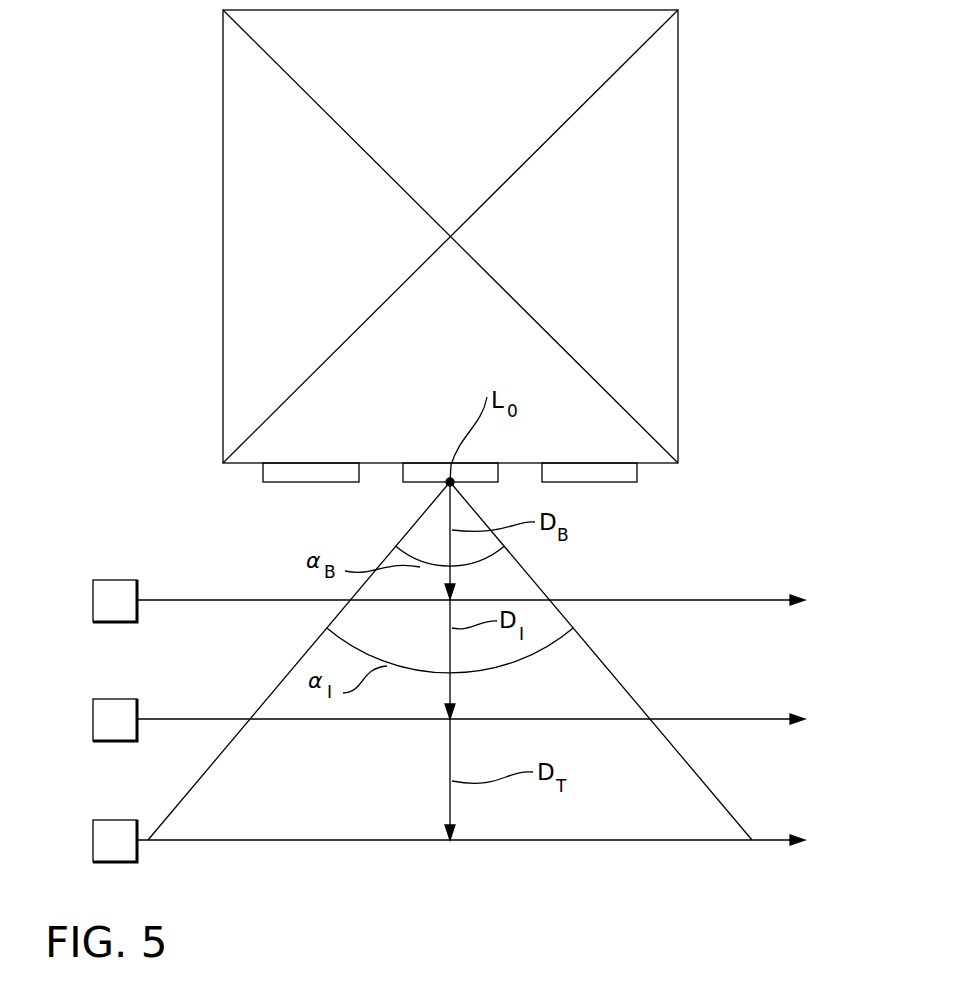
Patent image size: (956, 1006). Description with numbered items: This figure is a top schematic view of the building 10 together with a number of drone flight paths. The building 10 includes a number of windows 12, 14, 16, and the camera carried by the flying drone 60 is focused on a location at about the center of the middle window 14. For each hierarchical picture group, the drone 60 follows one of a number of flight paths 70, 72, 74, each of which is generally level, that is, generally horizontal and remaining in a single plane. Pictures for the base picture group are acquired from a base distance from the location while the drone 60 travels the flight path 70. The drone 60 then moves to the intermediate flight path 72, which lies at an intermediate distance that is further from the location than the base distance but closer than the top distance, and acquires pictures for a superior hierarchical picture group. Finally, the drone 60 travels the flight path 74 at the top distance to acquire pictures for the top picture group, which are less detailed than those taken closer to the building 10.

The building 10 is at (232, 234).
The window 12 is at (266, 471).
The middle window 14 is at (404, 471).
The window 16 is at (546, 471).
The flying drone 60 is at (93, 598).
The flight path 70 is at (758, 600).
The intermediate flight path 72 is at (754, 719).
The flight path 74 is at (762, 840).